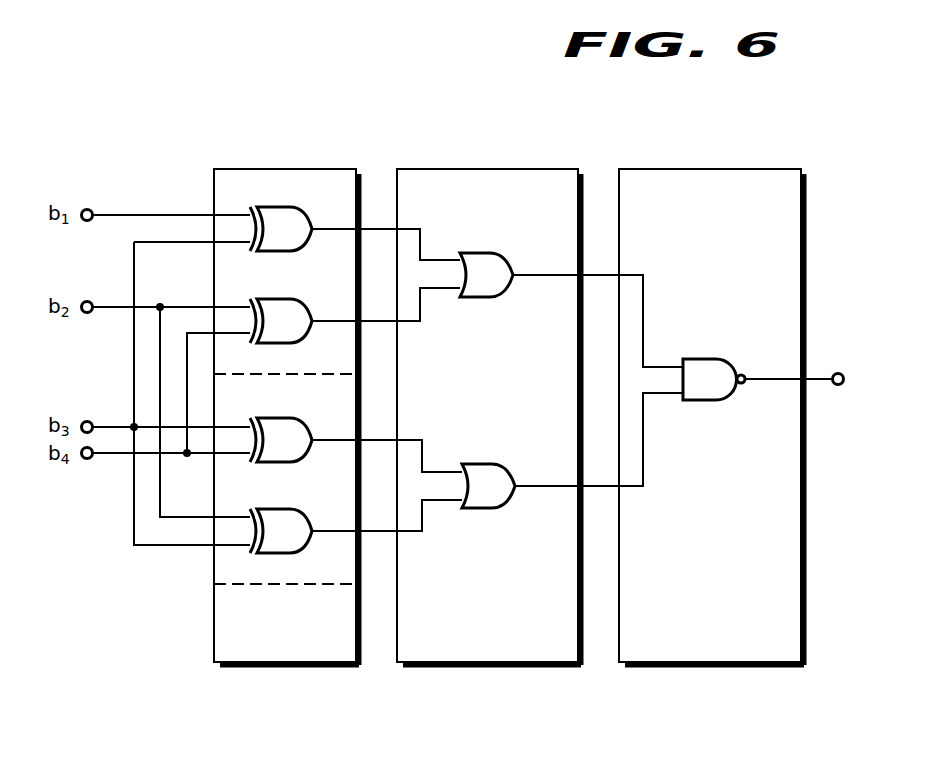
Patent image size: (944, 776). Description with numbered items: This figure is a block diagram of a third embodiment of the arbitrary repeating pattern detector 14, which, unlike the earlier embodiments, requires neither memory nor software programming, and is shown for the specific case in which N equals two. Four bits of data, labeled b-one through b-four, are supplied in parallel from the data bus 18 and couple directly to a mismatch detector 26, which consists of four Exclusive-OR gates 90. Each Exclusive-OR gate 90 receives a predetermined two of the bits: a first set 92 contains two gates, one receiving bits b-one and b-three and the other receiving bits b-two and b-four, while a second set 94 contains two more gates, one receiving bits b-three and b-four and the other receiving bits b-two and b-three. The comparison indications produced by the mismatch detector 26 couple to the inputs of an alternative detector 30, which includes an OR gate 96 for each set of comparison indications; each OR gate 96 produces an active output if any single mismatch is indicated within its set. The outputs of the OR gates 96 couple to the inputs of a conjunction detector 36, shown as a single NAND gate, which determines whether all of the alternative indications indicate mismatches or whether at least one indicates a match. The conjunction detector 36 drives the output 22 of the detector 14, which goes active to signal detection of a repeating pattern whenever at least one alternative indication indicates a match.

The arbitrary repeating pattern detector 14 is at (478, 106).
The data bus 18 is at (93, 473).
The output 22 is at (841, 373).
The mismatch detector 26 is at (315, 668).
The alternative detector 30 is at (530, 668).
The conjunction detector 36 is at (752, 668).
The Exclusive-OR gate 90 is at (304, 500).
The first set 92 is at (214, 185).
The second set 94 is at (214, 572).
The OR gate 96 is at (508, 459).